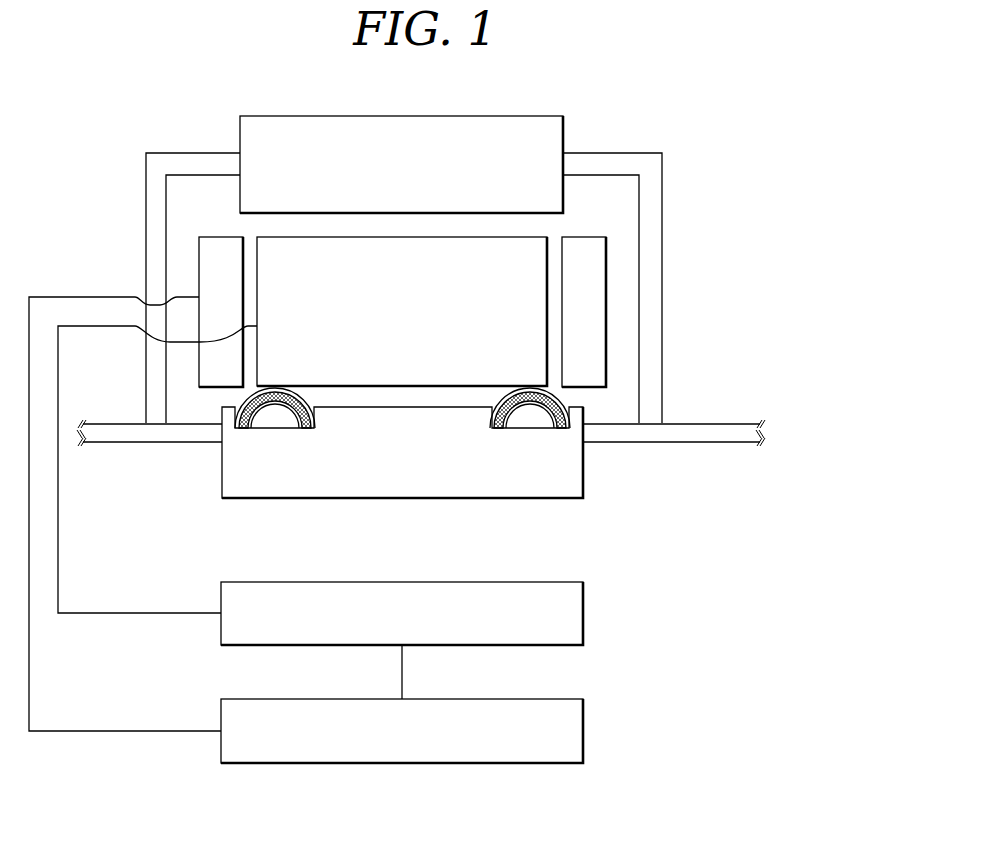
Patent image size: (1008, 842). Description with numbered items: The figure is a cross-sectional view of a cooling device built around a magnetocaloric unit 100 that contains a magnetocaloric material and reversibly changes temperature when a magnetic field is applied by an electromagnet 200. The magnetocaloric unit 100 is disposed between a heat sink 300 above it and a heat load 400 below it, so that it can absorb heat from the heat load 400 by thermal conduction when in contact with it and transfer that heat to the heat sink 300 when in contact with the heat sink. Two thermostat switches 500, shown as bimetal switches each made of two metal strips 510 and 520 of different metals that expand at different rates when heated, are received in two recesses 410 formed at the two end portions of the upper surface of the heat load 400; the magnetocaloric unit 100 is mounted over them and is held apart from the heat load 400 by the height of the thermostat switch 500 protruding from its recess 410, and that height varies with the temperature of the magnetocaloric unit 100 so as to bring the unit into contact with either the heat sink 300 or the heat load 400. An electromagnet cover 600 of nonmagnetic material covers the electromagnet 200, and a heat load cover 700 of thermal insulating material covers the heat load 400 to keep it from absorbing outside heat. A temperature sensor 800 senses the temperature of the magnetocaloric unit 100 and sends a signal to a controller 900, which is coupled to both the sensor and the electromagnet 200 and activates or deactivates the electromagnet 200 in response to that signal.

The magnetocaloric unit 100 is at (522, 257).
The electromagnet 200 is at (585, 298).
The heat sink 300 is at (545, 141).
The heat load 400 is at (567, 475).
The recess 410 is at (272, 415).
The thermostat switch 500 is at (483, 417).
The metal strip 510 is at (558, 404).
The metal strip 520 is at (540, 421).
The electromagnet cover 600 is at (157, 225).
The heat load cover 700 is at (110, 432).
The temperature sensor 800 is at (585, 613).
The controller 900 is at (585, 731).